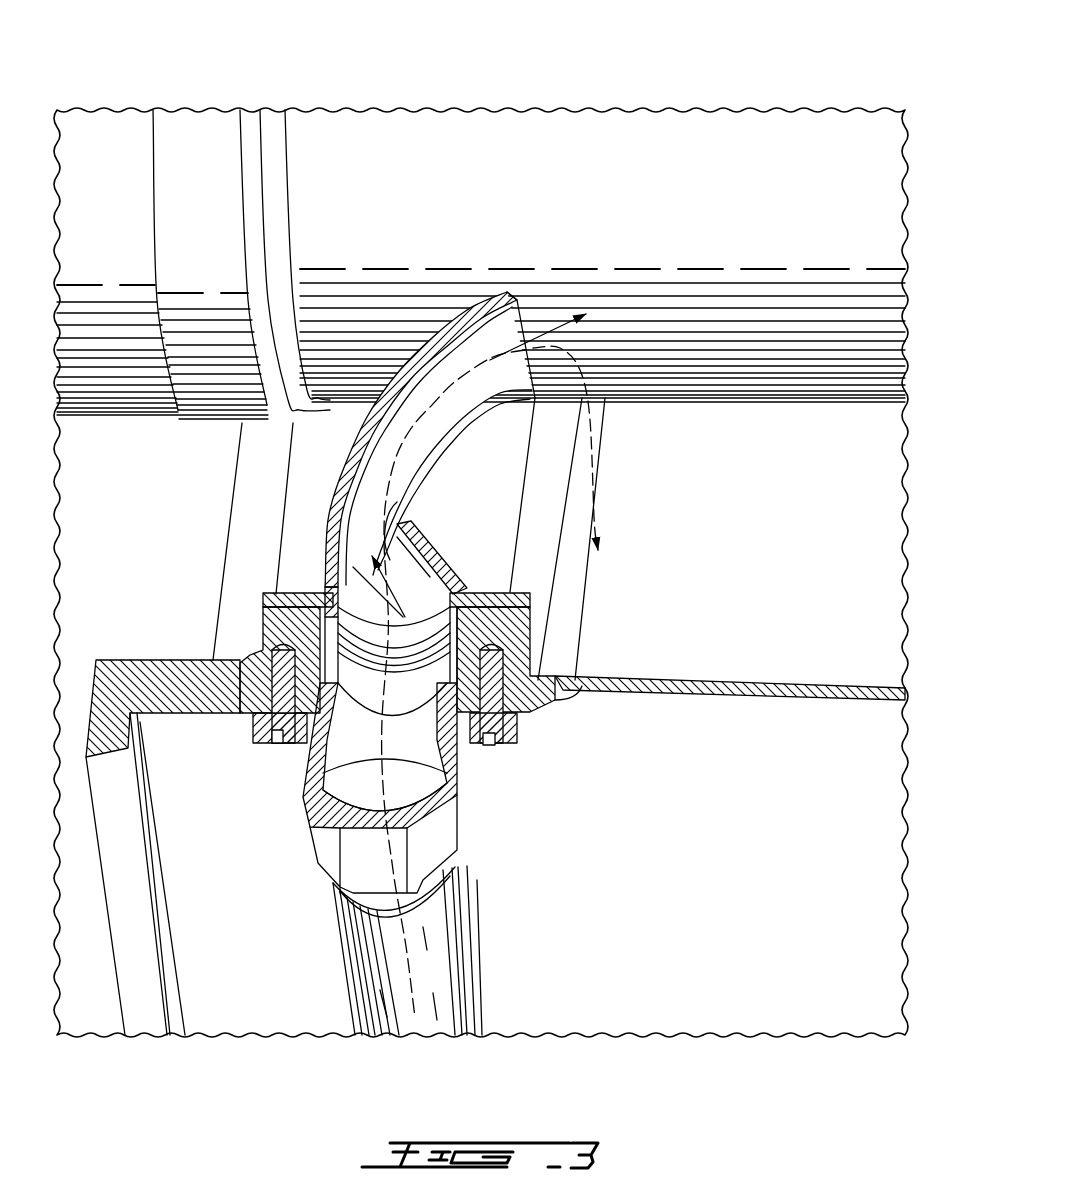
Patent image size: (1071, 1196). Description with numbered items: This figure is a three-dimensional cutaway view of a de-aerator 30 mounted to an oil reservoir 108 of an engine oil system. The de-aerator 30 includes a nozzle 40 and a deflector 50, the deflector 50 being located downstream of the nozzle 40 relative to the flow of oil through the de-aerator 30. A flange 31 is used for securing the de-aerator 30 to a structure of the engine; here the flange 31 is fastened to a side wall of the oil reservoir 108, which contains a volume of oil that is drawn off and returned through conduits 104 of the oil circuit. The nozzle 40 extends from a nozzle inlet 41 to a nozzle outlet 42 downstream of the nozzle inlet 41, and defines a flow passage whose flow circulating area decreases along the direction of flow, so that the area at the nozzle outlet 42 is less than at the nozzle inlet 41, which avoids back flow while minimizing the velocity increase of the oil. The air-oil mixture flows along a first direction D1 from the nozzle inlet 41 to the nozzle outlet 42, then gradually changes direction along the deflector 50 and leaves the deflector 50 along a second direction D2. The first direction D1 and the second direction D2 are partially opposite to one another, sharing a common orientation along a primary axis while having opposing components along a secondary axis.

The de-aerator 30 is at (419, 302).
The flange 31 is at (518, 596).
The nozzle 40 is at (316, 580).
The nozzle inlet 41 is at (430, 625).
The nozzle outlet 42 is at (390, 508).
The deflector 50 is at (504, 445).
The conduits 104 is at (438, 963).
The oil reservoir 108 is at (812, 510).
The first direction D1 is at (397, 578).
The second direction D2 is at (533, 347).